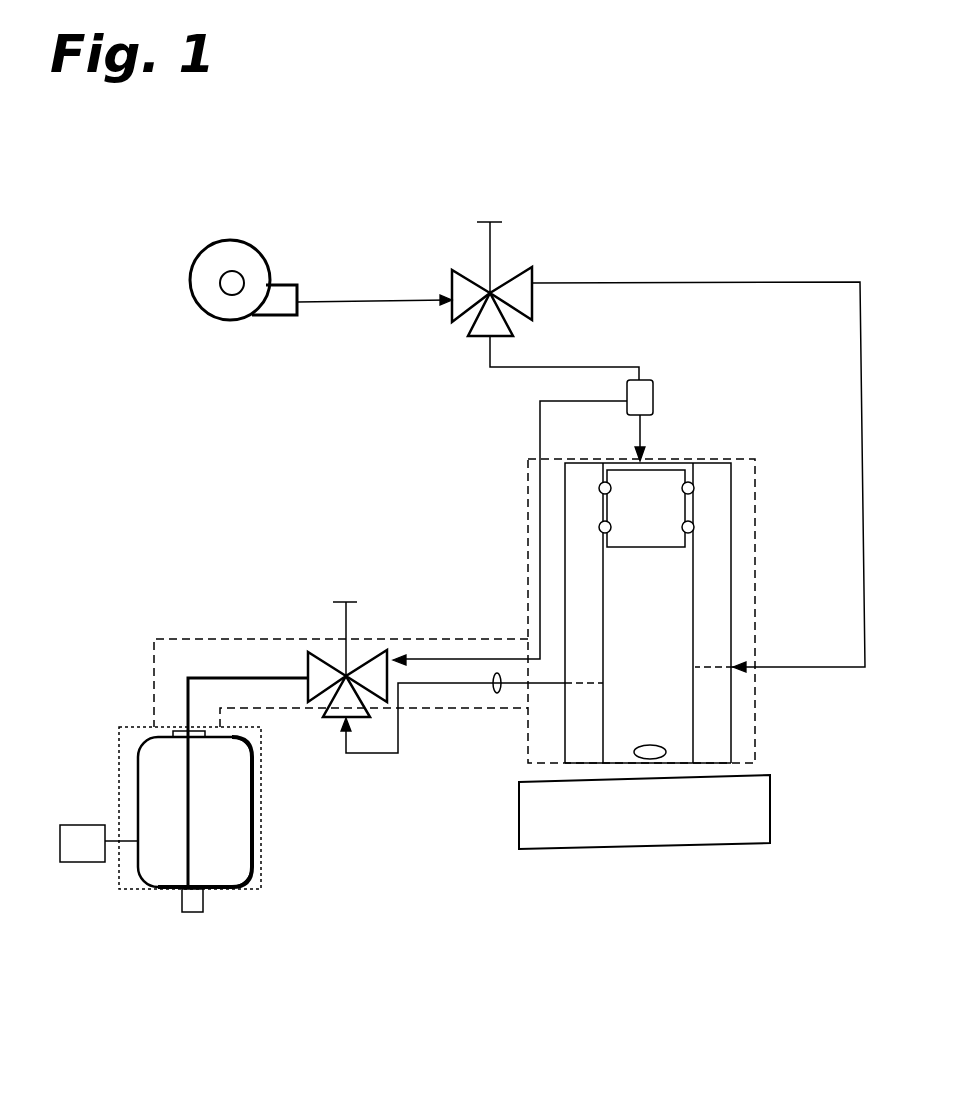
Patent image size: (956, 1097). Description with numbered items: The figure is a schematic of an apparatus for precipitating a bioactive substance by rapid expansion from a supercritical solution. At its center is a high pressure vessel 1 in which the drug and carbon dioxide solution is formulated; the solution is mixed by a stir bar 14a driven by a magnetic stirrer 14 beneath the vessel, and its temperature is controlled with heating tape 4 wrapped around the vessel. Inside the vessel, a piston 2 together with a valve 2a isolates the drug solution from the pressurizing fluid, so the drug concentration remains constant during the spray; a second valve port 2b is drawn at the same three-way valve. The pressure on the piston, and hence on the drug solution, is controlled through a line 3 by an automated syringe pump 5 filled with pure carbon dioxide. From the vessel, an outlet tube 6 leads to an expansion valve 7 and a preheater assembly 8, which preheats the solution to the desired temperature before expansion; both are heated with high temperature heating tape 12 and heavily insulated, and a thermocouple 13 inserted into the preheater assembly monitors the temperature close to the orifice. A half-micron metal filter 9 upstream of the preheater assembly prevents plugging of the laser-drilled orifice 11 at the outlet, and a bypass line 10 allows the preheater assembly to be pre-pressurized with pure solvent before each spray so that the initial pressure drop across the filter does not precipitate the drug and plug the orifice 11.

The high pressure vessel 1 is at (648, 613).
The piston 2 is at (549, 372).
The valve 2a is at (698, 468).
The second passage / line 2b is at (564, 366).
The line 3 is at (642, 432).
The heating tape 4 is at (656, 611).
The automated syringe pump 5 is at (204, 259).
The outlet tube 6 is at (497, 693).
The expansion valve 7 is at (373, 672).
The preheater assembly 8 is at (195, 810).
The metal filter 9 is at (183, 729).
The bypass line 10 is at (540, 580).
The laser-drilled orifice 11 is at (195, 912).
The high temperature heating tape 12 is at (341, 674).
The thermocouple 13 is at (99, 843).
The magnetic stirrer 14 is at (644, 812).
The stir bar 14a is at (676, 722).